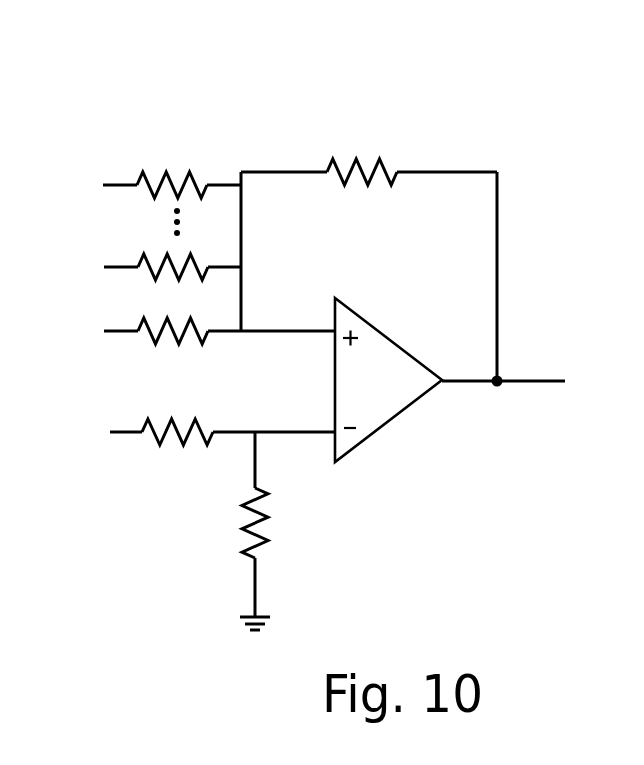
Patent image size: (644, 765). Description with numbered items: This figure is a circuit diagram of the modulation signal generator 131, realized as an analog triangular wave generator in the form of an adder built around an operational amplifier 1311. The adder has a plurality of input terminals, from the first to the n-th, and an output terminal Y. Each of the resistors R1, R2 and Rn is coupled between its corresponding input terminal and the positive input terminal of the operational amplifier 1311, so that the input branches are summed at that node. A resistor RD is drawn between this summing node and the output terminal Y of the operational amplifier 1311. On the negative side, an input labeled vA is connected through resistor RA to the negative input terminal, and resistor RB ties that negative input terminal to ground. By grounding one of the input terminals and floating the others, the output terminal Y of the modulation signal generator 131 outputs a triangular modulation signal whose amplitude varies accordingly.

The modulation signal generator 131 is at (438, 58).
The operational amplifier 1311 is at (419, 401).
The resistor RD is at (362, 154).
The resistor RA is at (177, 456).
The resistor RB is at (277, 523).
The resistor R1 is at (173, 346).
The resistor R2 is at (173, 282).
The resistor Rn is at (172, 165).